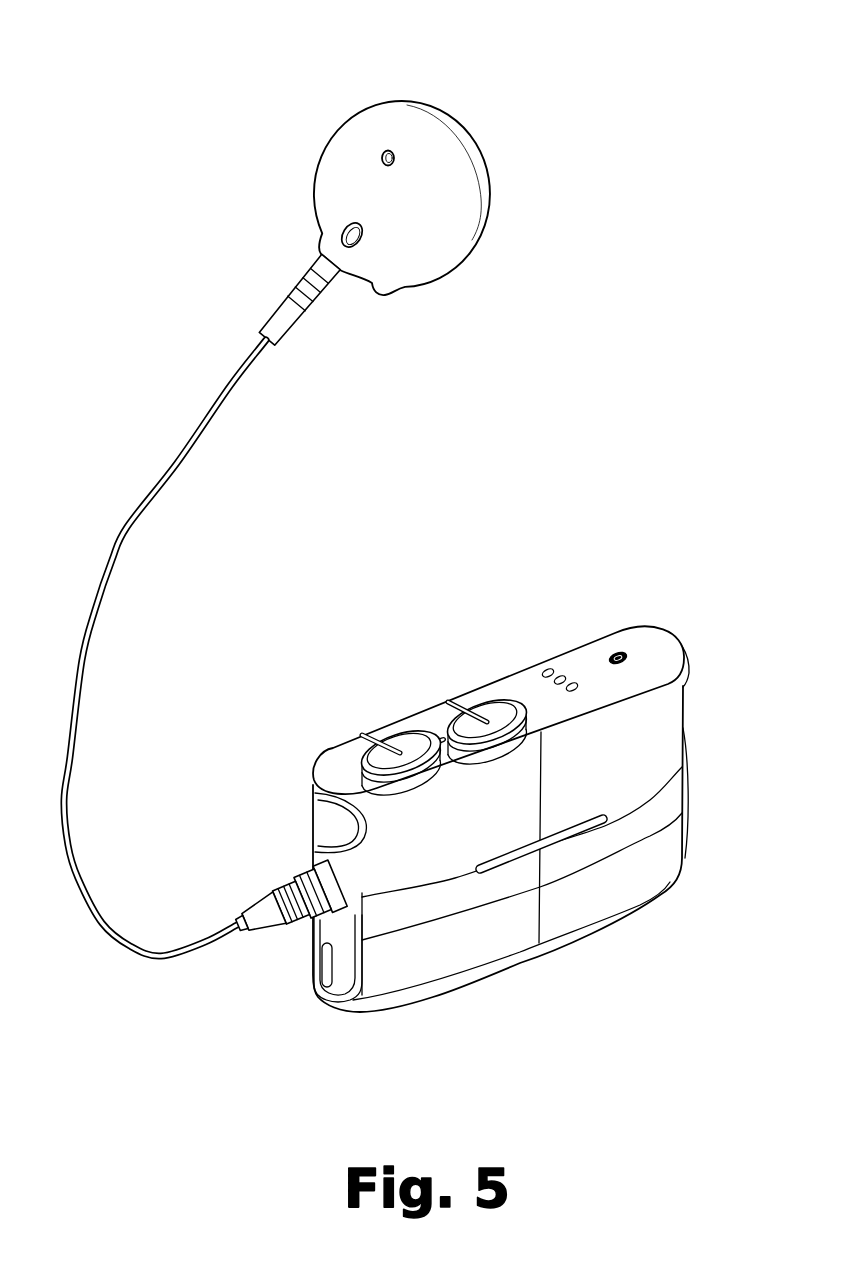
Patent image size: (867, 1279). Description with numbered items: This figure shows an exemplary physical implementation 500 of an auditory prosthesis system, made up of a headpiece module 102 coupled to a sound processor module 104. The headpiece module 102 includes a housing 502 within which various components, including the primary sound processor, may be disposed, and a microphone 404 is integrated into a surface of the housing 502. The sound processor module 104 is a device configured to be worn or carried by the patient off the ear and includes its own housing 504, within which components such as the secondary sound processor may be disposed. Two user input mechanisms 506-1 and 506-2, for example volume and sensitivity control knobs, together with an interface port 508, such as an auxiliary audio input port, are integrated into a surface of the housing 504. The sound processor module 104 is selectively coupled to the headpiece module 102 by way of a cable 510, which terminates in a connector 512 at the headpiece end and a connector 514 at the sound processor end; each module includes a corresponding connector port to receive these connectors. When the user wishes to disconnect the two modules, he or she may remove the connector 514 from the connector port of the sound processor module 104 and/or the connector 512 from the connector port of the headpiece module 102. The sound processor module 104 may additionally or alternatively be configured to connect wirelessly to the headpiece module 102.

The physical implementation 500 is at (112, 75).
The headpiece module 102 is at (340, 100).
The microphone 404 is at (383, 157).
The housing 502 is at (470, 175).
The connector 512 is at (285, 292).
The cable 510 is at (122, 528).
The sound processor module 104 is at (602, 941).
The housing 504 is at (670, 727).
The user input mechanism 506-1 is at (390, 745).
The user input mechanism 506-2 is at (485, 718).
The interface port 508 is at (619, 652).
The connector 514 is at (281, 932).